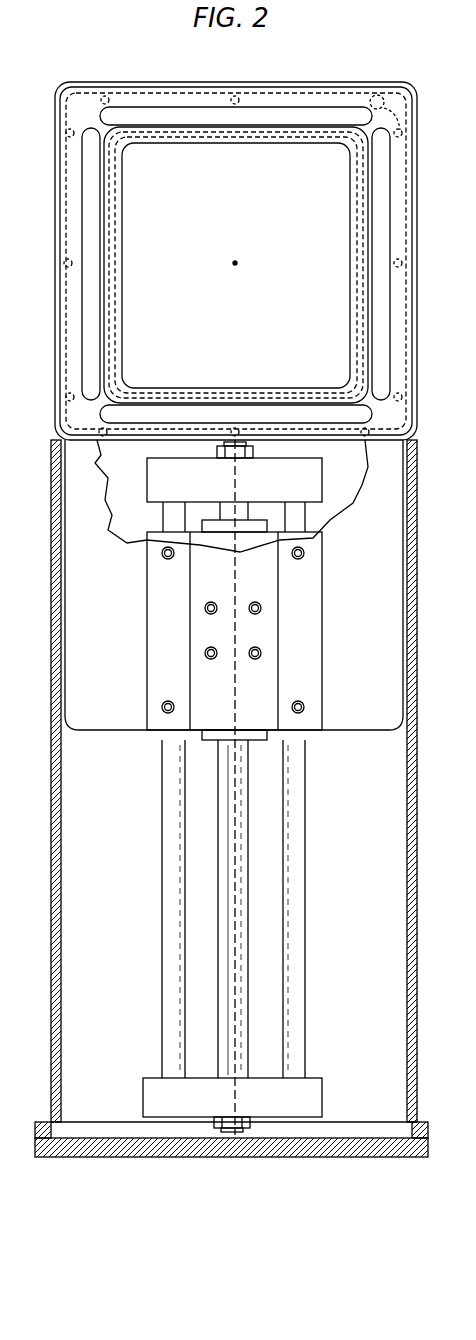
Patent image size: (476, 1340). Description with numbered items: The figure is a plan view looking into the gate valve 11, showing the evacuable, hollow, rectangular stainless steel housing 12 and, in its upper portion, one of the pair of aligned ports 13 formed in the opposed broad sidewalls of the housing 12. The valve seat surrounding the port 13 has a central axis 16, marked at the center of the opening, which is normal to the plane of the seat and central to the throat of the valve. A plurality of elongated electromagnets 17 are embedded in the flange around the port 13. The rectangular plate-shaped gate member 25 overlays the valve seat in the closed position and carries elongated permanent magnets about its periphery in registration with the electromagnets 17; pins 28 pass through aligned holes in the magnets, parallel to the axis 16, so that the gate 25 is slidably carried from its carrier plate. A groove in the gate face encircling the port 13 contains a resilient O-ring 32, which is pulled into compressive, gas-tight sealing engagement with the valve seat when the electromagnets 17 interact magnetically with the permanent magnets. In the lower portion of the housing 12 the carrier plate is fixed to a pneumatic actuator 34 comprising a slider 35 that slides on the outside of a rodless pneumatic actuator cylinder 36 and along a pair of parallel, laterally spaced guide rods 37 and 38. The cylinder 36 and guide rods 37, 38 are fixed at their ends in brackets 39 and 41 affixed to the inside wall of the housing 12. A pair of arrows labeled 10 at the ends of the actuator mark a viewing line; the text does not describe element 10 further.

The mounting assembly 10 is at (203, 442).
The gate valve 11 is at (48, 641).
The housing 12 is at (150, 82).
The port 13 is at (352, 287).
The central axis 16 is at (235, 263).
The electromagnets 17 is at (93, 177).
The gate member 25 is at (244, 253).
The pins 28 is at (384, 95).
The O-ring 32 is at (356, 219).
The pneumatic actuator 34 is at (203, 677).
The slider 35 is at (212, 740).
The pneumatic actuator cylinder 36 is at (243, 870).
The guide rod 37 is at (168, 856).
The guide rod 38 is at (300, 907).
The bracket 39 is at (289, 489).
The bracket 41 is at (272, 1108).